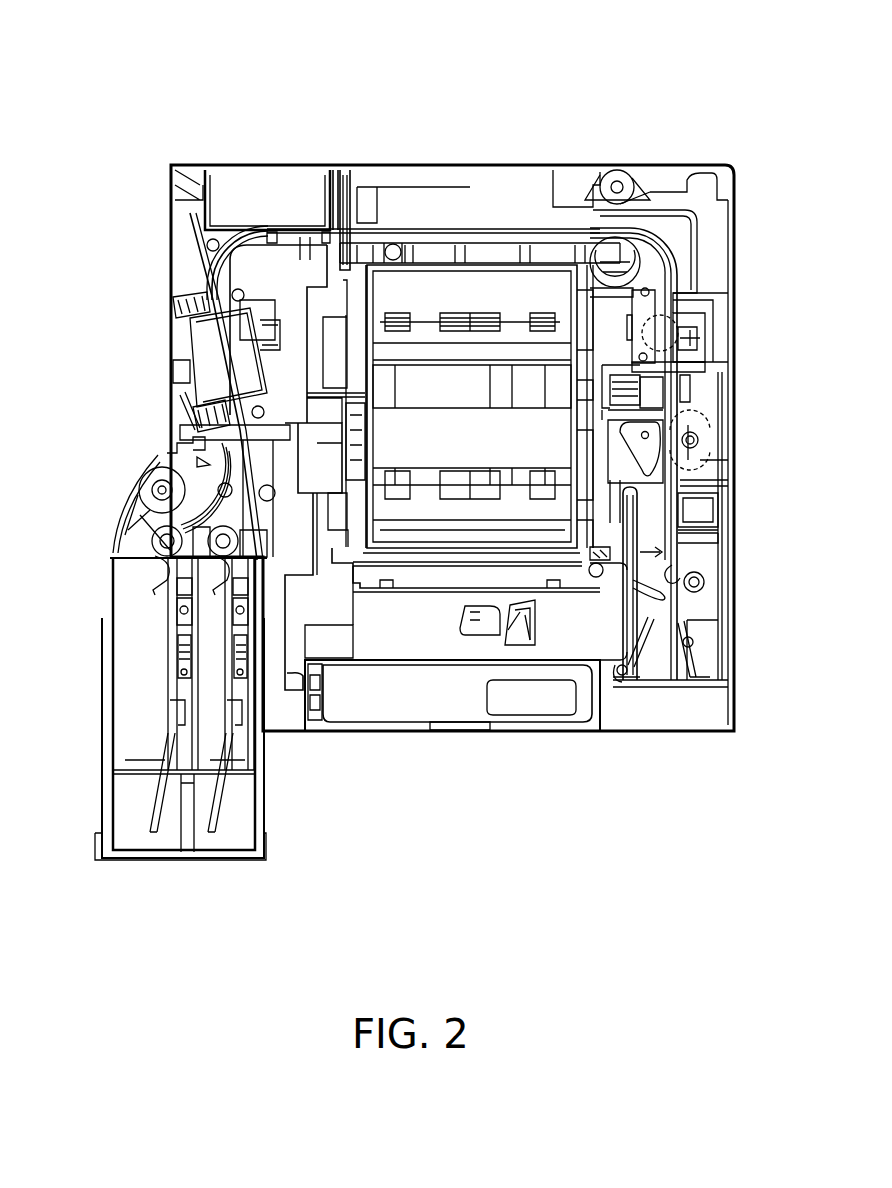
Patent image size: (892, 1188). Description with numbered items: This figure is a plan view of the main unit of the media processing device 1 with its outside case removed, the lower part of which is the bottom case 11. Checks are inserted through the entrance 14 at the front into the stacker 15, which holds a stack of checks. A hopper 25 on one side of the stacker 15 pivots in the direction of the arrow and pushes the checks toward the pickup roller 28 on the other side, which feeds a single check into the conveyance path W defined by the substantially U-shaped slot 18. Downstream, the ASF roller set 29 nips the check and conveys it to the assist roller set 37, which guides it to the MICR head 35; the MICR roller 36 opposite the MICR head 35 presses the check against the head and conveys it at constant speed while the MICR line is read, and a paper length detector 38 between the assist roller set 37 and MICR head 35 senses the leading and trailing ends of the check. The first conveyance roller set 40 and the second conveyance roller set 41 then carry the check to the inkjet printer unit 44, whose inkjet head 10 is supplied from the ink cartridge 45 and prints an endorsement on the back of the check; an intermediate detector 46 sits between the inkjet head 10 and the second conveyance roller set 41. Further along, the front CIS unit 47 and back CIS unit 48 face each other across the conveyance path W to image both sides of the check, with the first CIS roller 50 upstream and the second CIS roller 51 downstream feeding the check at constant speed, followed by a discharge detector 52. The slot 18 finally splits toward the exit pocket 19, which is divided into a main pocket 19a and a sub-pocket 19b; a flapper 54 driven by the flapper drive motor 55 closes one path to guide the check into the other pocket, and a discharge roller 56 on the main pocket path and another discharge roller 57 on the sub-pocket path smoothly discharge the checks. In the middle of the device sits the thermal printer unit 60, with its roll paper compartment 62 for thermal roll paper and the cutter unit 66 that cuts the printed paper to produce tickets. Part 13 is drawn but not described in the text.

The media processing device 1 is at (446, 84).
The inkjet head 10 is at (300, 240).
The bottom case 11 is at (686, 708).
The cover 13 is at (638, 165).
The entrance 14 is at (660, 655).
The stacker 15 is at (665, 620).
The slot 18 is at (505, 225).
The exit pocket 19 is at (180, 771).
The main pocket 19a is at (140, 745).
The sub-pocket 19b is at (210, 748).
The hopper 25 is at (625, 530).
The pickup roller 28 is at (674, 576).
The ASF roller set 29 is at (688, 463).
The MICR head 35 is at (670, 300).
The MICR roller 36 is at (652, 262).
The assist roller set 37 is at (695, 355).
The paper length detector 38 is at (665, 316).
The first conveyance roller set 40 is at (625, 235).
The second conveyance roller set 41 is at (392, 224).
The inkjet printer unit 44 is at (285, 232).
The ink cartridge 45 is at (457, 740).
The intermediate detector 46 is at (340, 226).
The front CIS unit 47 is at (200, 350).
The back CIS unit 48 is at (240, 355).
The first CIS roller 50 is at (200, 290).
The second CIS roller 51 is at (195, 405).
The discharge detector 52 is at (240, 432).
The flapper 54 is at (200, 468).
The flapper drive motor 55 is at (140, 492).
The discharge roller 56 is at (118, 558).
The discharge roller 57 is at (205, 523).
The thermal printer unit 60 is at (445, 520).
The roll paper compartment 62 is at (490, 428).
The cutter unit 66 is at (387, 632).
The conveyance path W is at (462, 226).